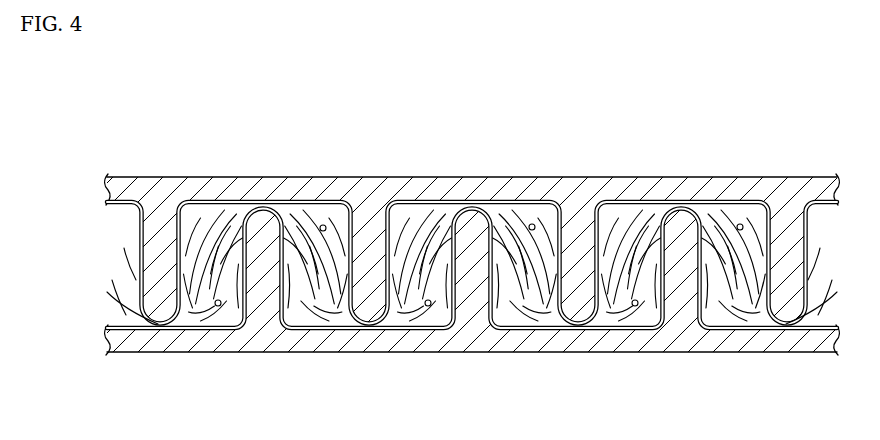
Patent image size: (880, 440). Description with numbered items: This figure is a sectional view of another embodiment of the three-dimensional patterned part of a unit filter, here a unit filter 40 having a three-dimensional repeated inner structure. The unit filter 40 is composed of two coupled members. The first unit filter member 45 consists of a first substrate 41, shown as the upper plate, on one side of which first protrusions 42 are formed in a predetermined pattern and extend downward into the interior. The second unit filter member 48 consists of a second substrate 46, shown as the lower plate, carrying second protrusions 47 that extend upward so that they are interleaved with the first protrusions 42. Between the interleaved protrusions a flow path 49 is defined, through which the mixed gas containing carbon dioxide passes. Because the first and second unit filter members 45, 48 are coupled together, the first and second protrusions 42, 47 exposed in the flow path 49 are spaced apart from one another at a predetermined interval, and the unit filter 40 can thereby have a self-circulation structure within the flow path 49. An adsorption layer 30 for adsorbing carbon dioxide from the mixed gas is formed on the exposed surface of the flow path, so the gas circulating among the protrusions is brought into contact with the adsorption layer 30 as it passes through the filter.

The adsorption layer 30 is at (178, 300).
The unit filter 40 is at (355, 145).
The first substrate 41 is at (400, 177).
The first protrusions 42 is at (385, 252).
The first unit filter member 45 is at (425, 118).
The second substrate 46 is at (470, 337).
The second protrusions 47 is at (477, 273).
The second unit filter member 48 is at (554, 373).
The flow path 49 is at (626, 240).